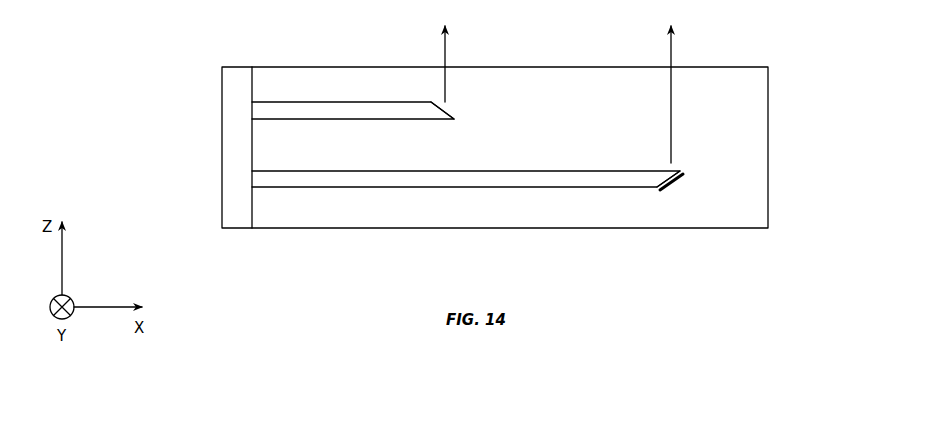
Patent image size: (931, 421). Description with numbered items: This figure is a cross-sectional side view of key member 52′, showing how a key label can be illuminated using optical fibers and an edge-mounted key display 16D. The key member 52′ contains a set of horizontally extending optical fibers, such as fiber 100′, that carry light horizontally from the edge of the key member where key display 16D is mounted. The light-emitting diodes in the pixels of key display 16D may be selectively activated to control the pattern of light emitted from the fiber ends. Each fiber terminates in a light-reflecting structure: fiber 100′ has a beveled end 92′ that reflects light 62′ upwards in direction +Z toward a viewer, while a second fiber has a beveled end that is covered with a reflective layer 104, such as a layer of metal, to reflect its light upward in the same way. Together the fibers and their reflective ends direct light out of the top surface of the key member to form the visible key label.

The key member 52′ is at (755, 145).
The key display 16D is at (222, 145).
The fiber 100′ is at (334, 110).
The reflective layer 104 is at (684, 175).
The light 62′ is at (447, 45).
The beveled end 92′ is at (470, 109).